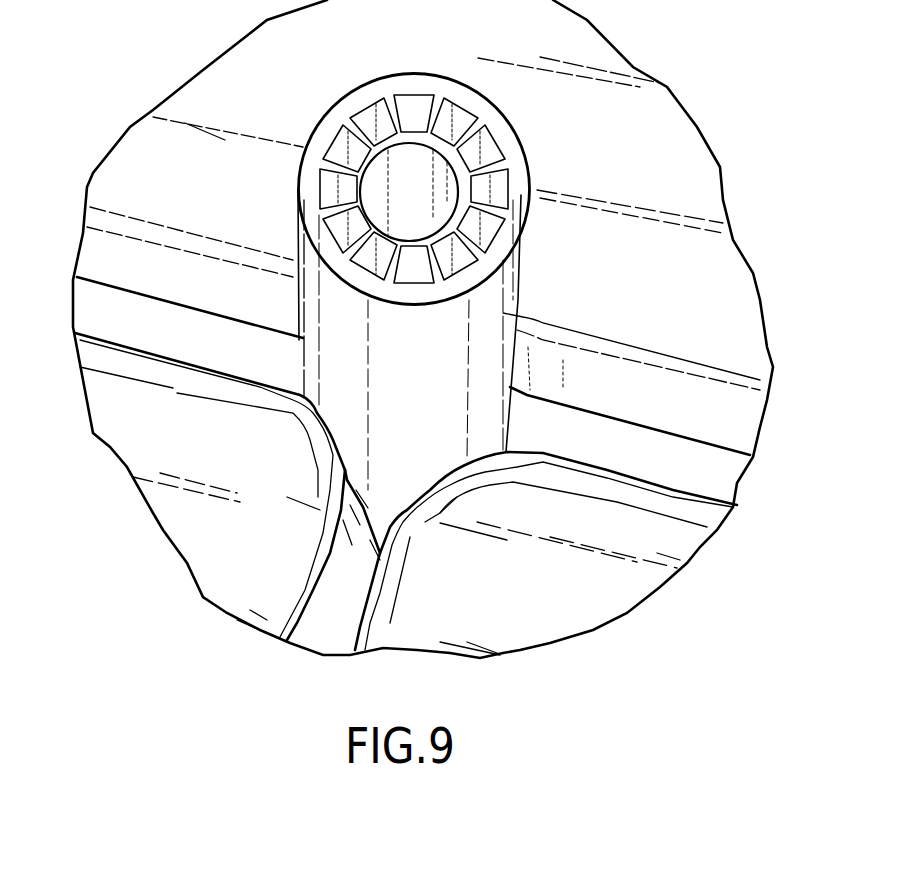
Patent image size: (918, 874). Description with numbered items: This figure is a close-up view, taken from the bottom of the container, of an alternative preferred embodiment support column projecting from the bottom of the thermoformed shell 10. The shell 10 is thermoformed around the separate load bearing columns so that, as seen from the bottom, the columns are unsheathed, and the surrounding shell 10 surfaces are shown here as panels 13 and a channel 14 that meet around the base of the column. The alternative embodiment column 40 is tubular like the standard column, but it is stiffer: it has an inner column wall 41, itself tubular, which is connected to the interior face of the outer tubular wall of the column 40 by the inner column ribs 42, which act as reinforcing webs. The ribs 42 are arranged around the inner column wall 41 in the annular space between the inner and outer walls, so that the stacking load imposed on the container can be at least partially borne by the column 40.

The thermoformed shell 10 is at (185, 527).
The panel 13 is at (118, 318).
The channel 14 is at (325, 637).
The alternative embodiment column 40 is at (414, 282).
The inner column wall 41 is at (487, 162).
The inner column ribs 42 is at (463, 113).